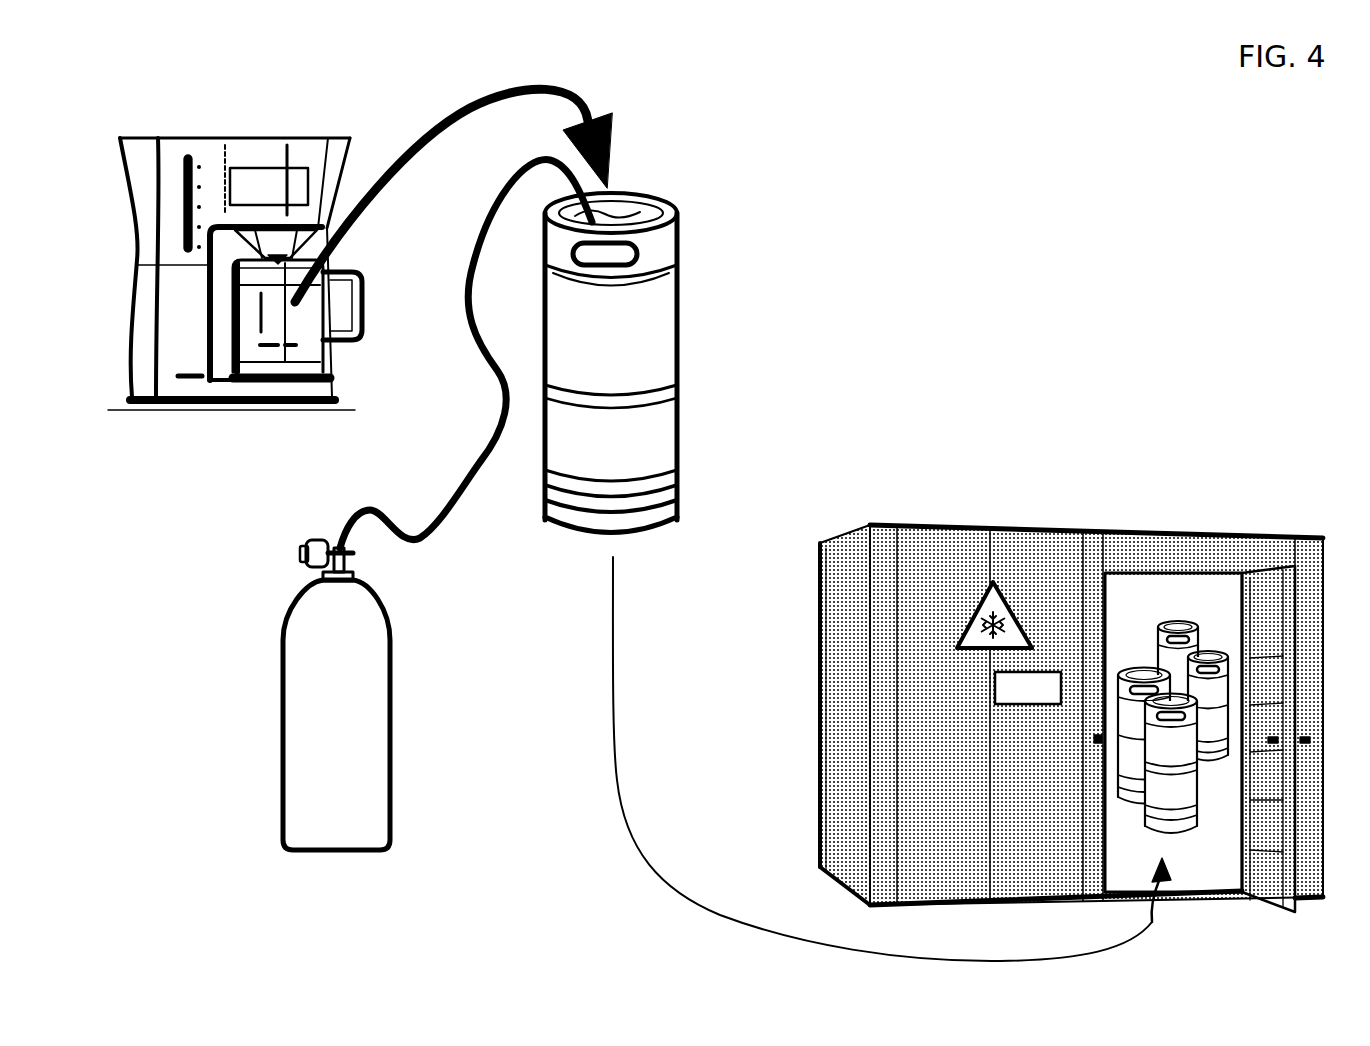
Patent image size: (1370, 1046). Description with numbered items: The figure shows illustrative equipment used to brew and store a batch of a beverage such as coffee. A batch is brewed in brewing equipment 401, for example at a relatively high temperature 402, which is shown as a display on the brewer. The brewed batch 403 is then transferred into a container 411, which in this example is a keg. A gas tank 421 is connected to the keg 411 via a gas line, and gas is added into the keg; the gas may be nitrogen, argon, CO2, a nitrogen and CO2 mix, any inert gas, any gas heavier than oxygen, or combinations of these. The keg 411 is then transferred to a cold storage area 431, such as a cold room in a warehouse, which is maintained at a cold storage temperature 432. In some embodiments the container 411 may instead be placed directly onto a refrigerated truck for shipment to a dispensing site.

The brewing equipment 401 is at (252, 133).
The relatively high temperature 402 is at (295, 167).
The batch 403 is at (308, 333).
The container 411 is at (650, 340).
The gas tank 421 is at (390, 663).
The cold storage area 431 is at (1133, 525).
The cold storage temperature 432 is at (995, 691).